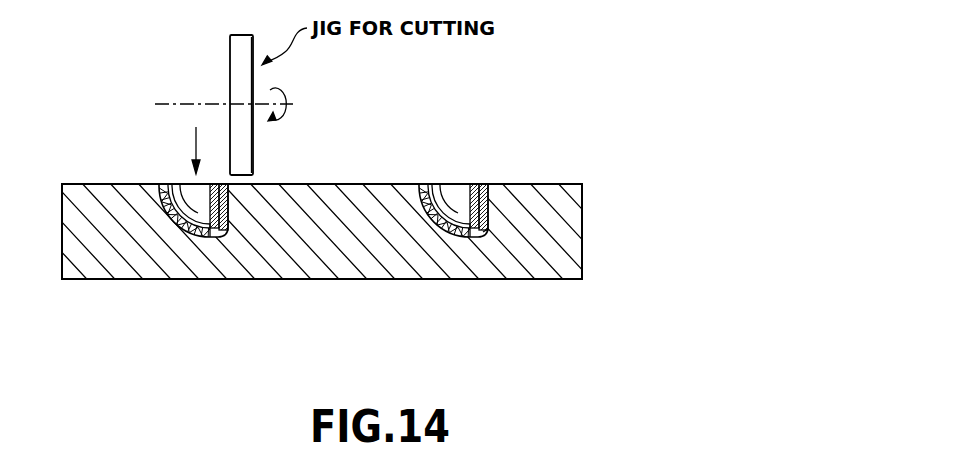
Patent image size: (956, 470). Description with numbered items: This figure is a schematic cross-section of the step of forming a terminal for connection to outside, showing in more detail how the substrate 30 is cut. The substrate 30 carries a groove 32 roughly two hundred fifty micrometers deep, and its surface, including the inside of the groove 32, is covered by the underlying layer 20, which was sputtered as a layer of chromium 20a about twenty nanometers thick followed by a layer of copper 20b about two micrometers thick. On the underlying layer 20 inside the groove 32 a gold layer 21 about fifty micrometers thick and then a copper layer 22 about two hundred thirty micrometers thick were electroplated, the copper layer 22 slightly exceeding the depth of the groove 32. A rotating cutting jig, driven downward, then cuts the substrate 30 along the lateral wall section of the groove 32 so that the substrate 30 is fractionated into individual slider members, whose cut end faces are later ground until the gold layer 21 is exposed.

The underlying layer 20 is at (542, 153).
The layer of chromium 20a is at (482, 185).
The layer of copper 20b is at (475, 185).
The gold layer 21 is at (430, 185).
The copper layer 22 is at (451, 185).
The substrate 30 is at (568, 250).
The groove 32 is at (484, 232).